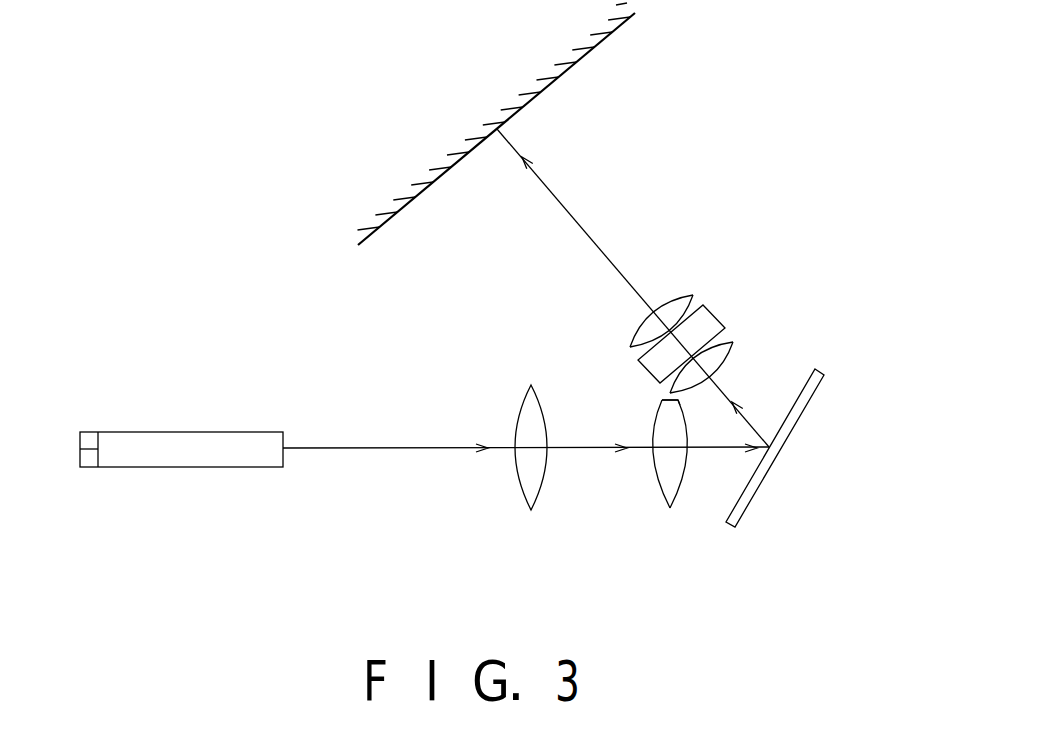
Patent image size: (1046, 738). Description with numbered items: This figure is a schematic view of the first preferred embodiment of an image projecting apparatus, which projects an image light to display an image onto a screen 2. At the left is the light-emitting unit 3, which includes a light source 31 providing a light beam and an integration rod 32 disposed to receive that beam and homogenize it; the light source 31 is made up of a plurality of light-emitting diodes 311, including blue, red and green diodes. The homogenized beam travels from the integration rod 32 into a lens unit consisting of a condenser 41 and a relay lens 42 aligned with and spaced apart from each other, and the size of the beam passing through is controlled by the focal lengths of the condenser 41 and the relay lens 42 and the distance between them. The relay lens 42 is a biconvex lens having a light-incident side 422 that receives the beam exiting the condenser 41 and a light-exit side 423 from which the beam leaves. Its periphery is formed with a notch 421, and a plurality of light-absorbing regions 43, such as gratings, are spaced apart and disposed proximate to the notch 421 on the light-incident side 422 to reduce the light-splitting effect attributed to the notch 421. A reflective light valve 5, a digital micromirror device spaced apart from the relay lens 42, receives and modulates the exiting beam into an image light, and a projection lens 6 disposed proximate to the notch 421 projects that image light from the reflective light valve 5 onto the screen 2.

The screen 2 is at (574, 82).
The light-emitting unit 3 is at (152, 478).
The light source 31 is at (74, 478).
The light-emitting diode 311 is at (84, 432).
The integration rod 32 is at (182, 442).
The condenser 41 is at (525, 425).
The relay lens 42 is at (643, 465).
The notch 421 is at (670, 393).
The light-incident side 422 is at (657, 477).
The light-exit side 423 is at (678, 493).
The light-absorbing regions 43 is at (667, 400).
The reflective light valve 5 is at (806, 389).
The projection lens 6 is at (722, 302).